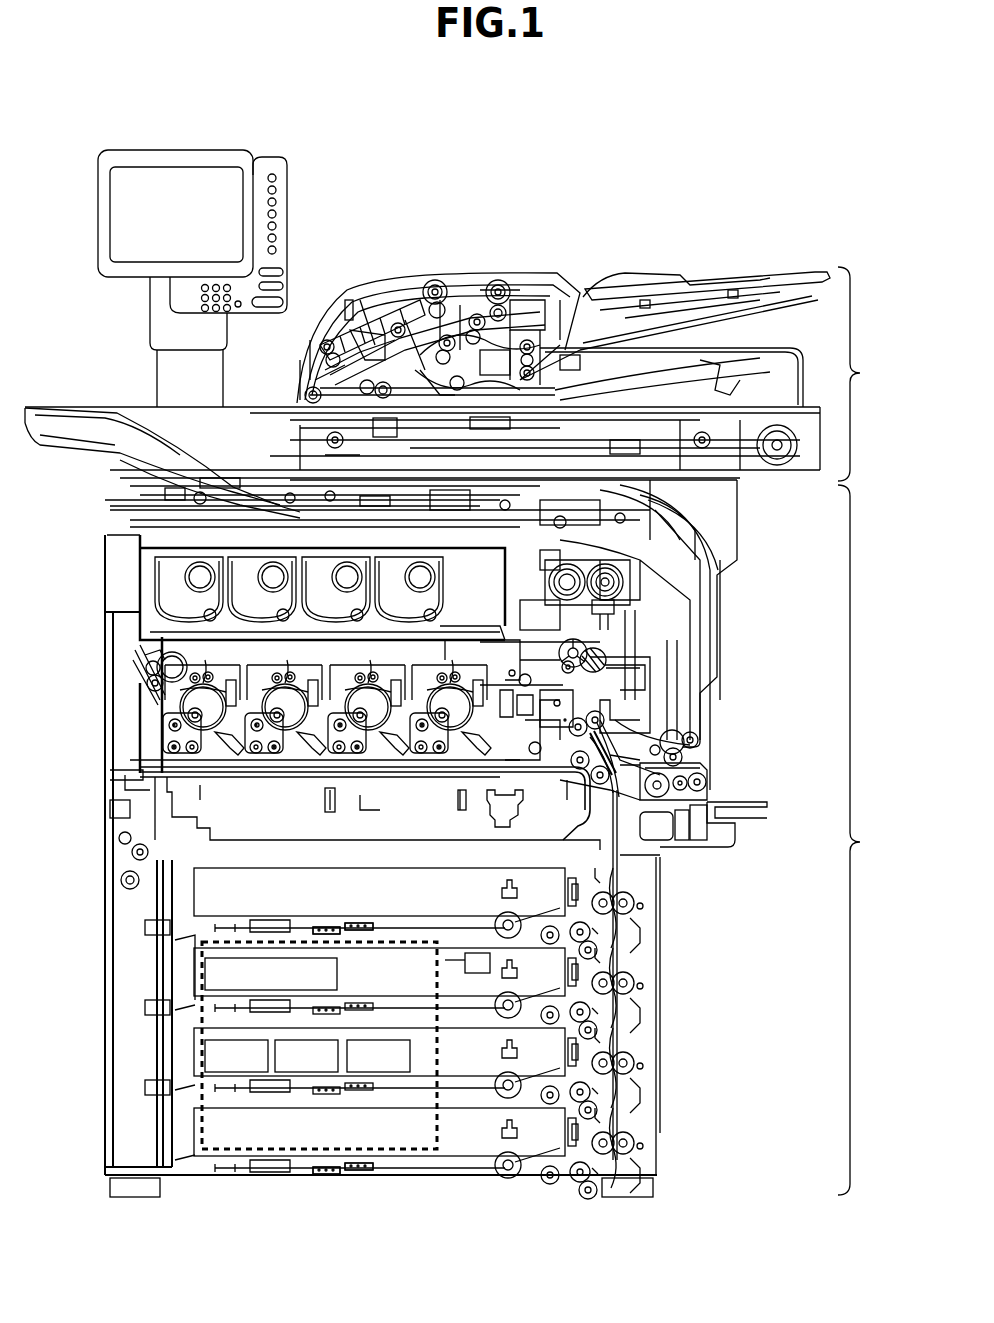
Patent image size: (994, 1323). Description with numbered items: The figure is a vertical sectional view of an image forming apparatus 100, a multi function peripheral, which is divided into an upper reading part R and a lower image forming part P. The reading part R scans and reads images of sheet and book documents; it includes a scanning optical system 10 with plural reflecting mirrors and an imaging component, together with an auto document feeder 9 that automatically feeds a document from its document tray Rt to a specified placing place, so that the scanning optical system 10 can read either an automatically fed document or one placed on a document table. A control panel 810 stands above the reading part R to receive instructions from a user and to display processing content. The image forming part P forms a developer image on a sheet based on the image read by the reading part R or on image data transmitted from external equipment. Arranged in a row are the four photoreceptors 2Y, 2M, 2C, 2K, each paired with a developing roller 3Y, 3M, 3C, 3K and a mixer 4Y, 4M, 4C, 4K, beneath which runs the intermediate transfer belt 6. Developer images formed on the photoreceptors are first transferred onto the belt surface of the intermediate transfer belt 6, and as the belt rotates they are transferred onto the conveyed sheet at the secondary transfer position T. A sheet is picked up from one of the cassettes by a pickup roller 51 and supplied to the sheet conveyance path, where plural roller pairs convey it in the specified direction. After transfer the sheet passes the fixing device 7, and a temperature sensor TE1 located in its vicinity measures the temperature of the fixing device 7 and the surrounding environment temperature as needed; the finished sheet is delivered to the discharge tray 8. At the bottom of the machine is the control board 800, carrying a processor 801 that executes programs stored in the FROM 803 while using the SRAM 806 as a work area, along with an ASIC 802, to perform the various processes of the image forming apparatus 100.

The image forming apparatus 100 is at (645, 181).
The control panel 810 is at (133, 150).
The auto document feeder 9 is at (330, 300).
The scanning optical system 10 is at (302, 396).
The document tray Rt is at (705, 292).
The discharge tray 8 is at (120, 410).
The reading part R is at (858, 374).
The image forming part P is at (858, 840).
The photoreceptor 2Y is at (203, 698).
The photoreceptor 2M is at (285, 698).
The photoreceptor 2C is at (368, 698).
The photoreceptor 2K is at (450, 698).
The developing roller 3Y is at (163, 720).
The mixer 4Y is at (174, 752).
The developing roller 3M is at (233, 750).
The mixer 4M is at (257, 750).
The developing roller 3C is at (318, 750).
The mixer 4C is at (340, 750).
The developing roller 3K is at (400, 750).
The mixer 4K is at (422, 750).
The intermediate transfer belt 6 is at (505, 634).
The fixing device 7 is at (612, 582).
The temperature sensor TE1 is at (596, 606).
The secondary transfer position T is at (598, 668).
The pickup roller 51 is at (543, 1126).
The control board 800 is at (440, 1040).
The processor 801 is at (340, 975).
The ASIC 802 is at (237, 1073).
The FROM 803 is at (310, 1073).
The SRAM 806 is at (385, 1073).